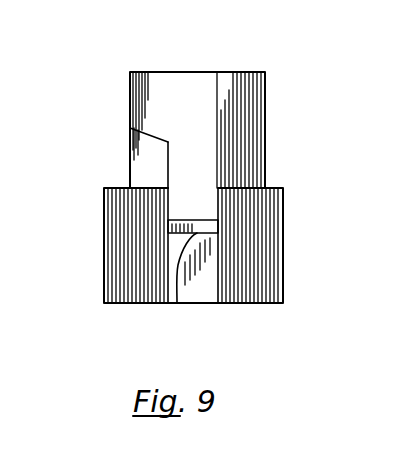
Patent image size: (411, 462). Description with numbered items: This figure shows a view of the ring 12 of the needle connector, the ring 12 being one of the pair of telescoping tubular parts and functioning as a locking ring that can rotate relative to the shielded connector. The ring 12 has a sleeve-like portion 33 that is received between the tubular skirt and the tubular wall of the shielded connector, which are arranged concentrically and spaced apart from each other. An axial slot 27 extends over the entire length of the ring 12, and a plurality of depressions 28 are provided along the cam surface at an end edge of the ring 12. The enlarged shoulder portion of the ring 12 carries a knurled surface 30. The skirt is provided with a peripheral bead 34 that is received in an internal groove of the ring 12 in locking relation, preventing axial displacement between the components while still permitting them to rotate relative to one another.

The ring 12 is at (60, 236).
The axial slot 27 is at (166, 172).
The depressions 28 is at (124, 129).
The knurled surface 30 is at (104, 290).
The sleeve-like portion 33 is at (172, 80).
The peripheral bead 34 is at (177, 303).